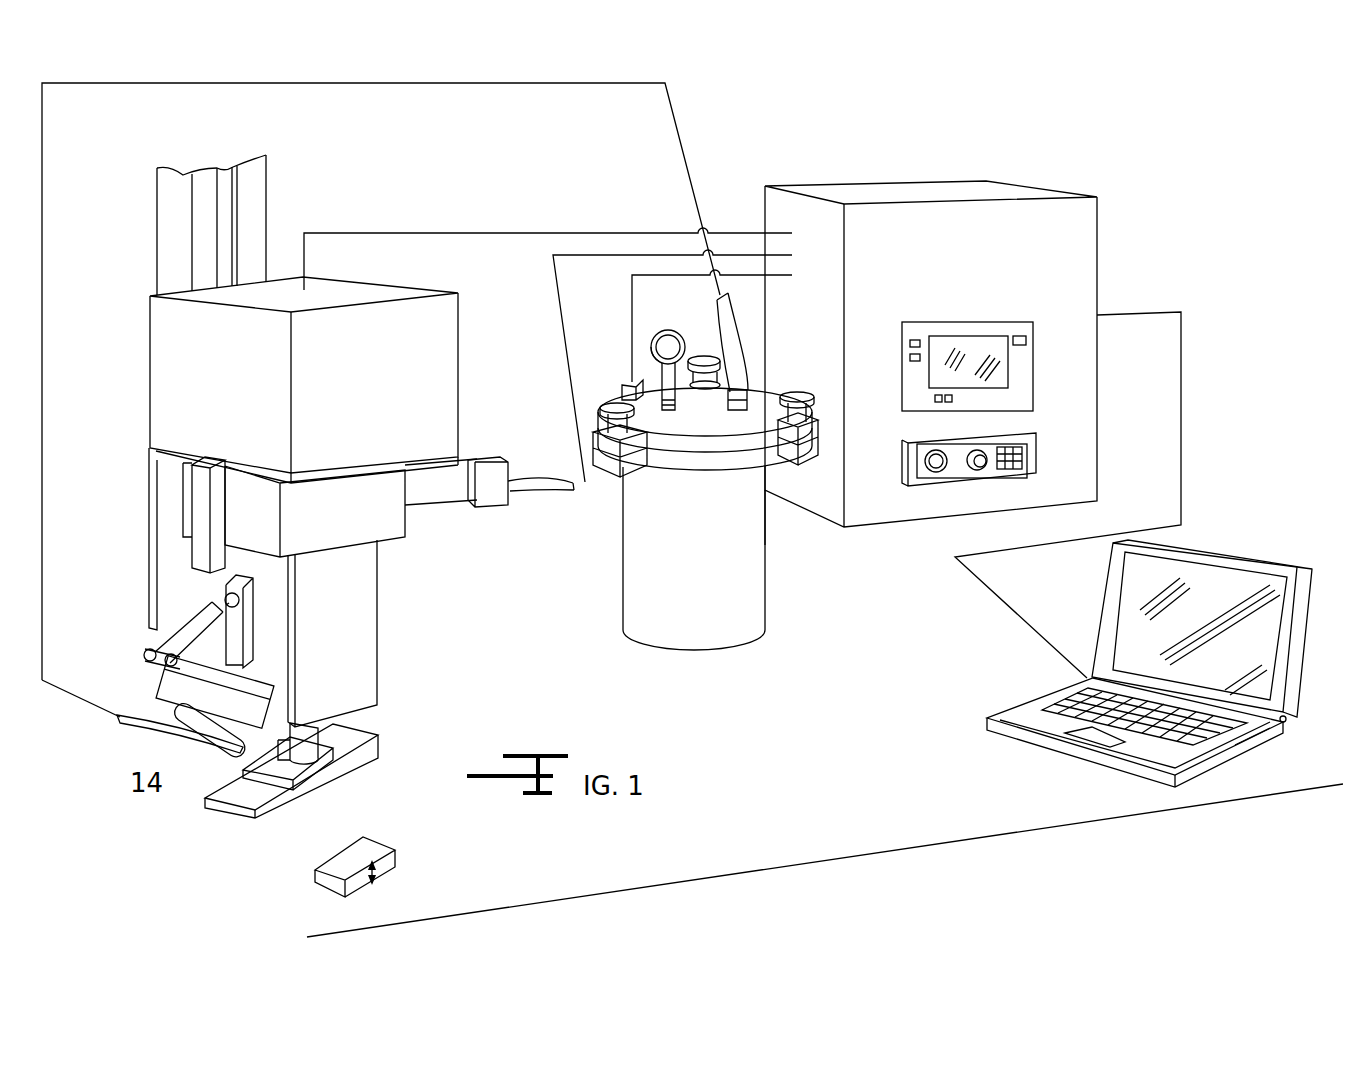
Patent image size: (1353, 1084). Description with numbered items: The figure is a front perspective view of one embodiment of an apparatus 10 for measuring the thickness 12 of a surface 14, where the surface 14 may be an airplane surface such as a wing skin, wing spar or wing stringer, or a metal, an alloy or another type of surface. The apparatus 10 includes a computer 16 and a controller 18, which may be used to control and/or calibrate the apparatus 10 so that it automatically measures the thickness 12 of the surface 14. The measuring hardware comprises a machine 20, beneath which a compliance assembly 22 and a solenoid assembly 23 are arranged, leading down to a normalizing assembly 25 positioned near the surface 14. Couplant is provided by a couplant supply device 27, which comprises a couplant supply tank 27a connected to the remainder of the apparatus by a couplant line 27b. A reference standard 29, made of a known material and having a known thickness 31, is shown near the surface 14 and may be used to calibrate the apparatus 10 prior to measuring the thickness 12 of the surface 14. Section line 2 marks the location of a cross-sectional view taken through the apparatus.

The apparatus 10 is at (928, 152).
The thickness 12 is at (291, 772).
The surface 14 is at (308, 768).
The computer 16 is at (1210, 573).
The controller 18 is at (1067, 258).
The machine 20 is at (175, 355).
The compliance assembly 22 is at (373, 508).
The solenoid assembly 23 is at (347, 630).
The normalizing assembly 25 is at (305, 737).
The couplant supply device 27 is at (213, 723).
The couplant supply tank 27a is at (727, 568).
The couplant line 27b is at (133, 717).
The reference standard 29 is at (357, 855).
The known thickness 31 is at (380, 872).
The section line 2 is at (350, 945).